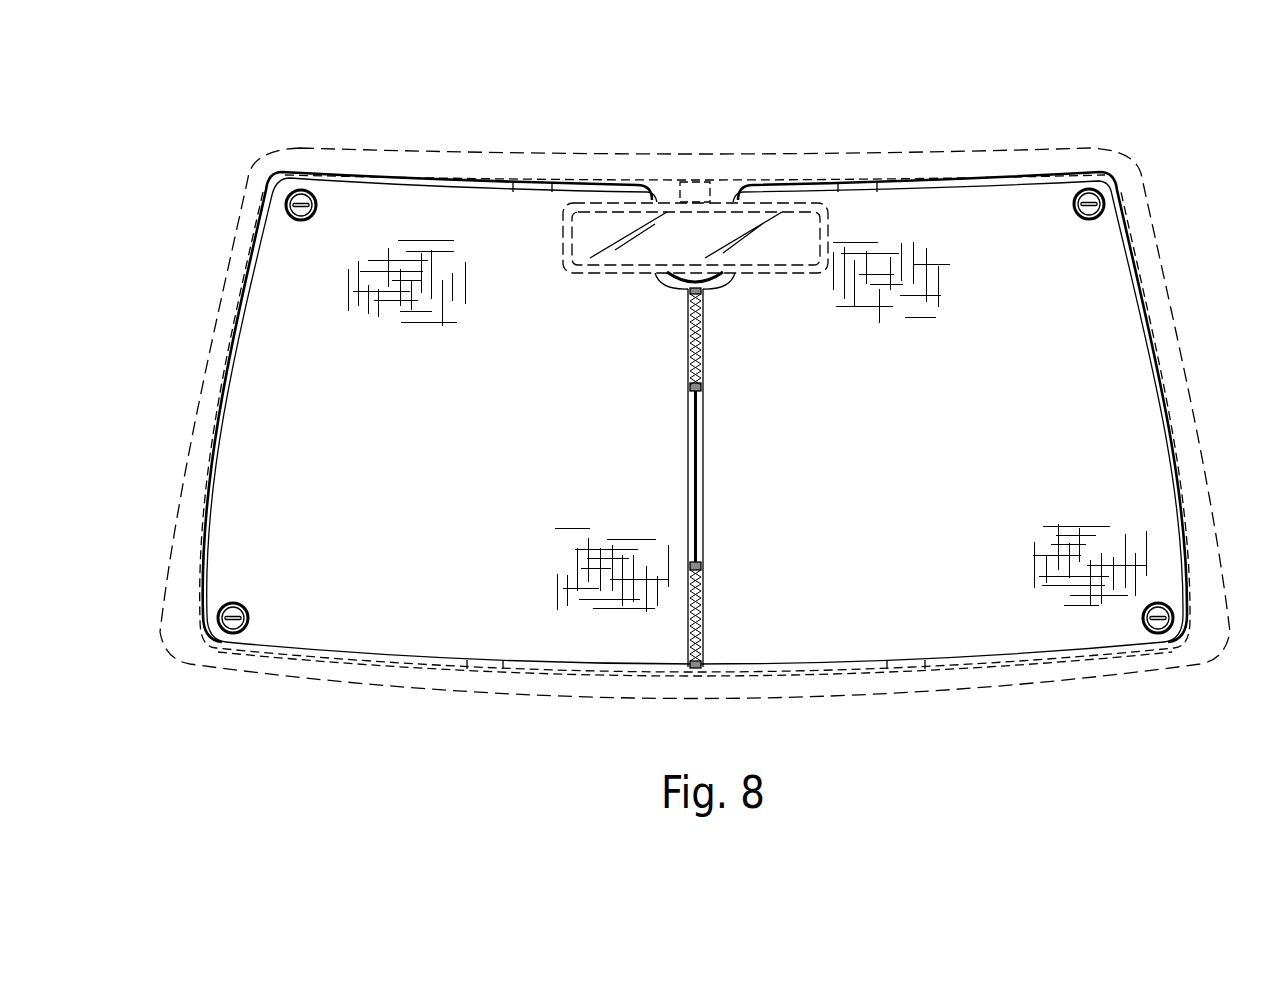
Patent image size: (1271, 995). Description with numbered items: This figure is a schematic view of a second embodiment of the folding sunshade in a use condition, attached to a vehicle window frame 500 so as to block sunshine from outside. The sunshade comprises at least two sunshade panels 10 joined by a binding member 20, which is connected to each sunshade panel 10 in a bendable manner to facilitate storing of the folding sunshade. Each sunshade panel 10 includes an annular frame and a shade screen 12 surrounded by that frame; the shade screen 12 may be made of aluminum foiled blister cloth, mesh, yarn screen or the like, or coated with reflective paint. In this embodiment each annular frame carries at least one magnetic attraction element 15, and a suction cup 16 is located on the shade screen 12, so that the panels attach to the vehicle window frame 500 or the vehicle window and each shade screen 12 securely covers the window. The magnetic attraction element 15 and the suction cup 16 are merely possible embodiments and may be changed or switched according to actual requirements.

The vehicle window frame 500 is at (262, 150).
The sunshade panel 10 is at (470, 175).
The shade screen 12 is at (372, 245).
The magnetic attraction element 15 is at (538, 184).
The suction cup 16 is at (301, 190).
The binding member 20 is at (708, 362).